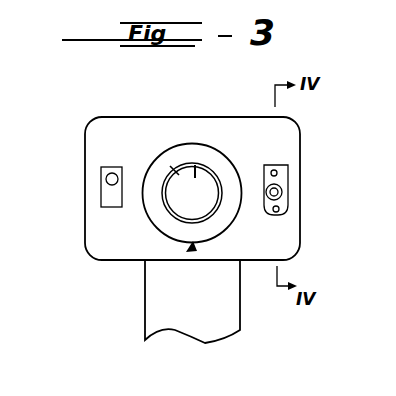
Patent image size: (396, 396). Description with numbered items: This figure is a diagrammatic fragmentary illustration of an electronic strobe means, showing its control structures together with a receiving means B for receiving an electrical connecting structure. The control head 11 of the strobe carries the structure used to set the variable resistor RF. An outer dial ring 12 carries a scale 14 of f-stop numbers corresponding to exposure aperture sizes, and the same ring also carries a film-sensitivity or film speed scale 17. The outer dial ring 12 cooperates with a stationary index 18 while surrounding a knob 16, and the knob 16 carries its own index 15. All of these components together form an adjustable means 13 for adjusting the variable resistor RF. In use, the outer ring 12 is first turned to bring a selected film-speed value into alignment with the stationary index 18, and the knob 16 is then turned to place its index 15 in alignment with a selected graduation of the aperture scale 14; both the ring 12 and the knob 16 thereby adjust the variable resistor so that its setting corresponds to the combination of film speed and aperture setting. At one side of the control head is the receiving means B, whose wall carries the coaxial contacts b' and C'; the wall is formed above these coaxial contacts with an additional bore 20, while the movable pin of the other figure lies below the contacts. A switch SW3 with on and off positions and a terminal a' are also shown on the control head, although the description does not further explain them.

The control head 11 is at (283, 132).
The outer dial ring 12 is at (150, 188).
The adjustable means 13 is at (156, 180).
The scale of f-stop numbers 14 is at (195, 165).
The index 15 is at (208, 167).
The knob 16 is at (172, 196).
The film speed scale 17 is at (150, 205).
The stationary index 18 is at (190, 247).
The additional bore 20 is at (282, 167).
The receiving means B is at (283, 182).
The coaxial contact b' is at (304, 199).
The coaxial contact C' is at (308, 221).
The terminal a' is at (301, 248).
The switch SW3 is at (107, 196).